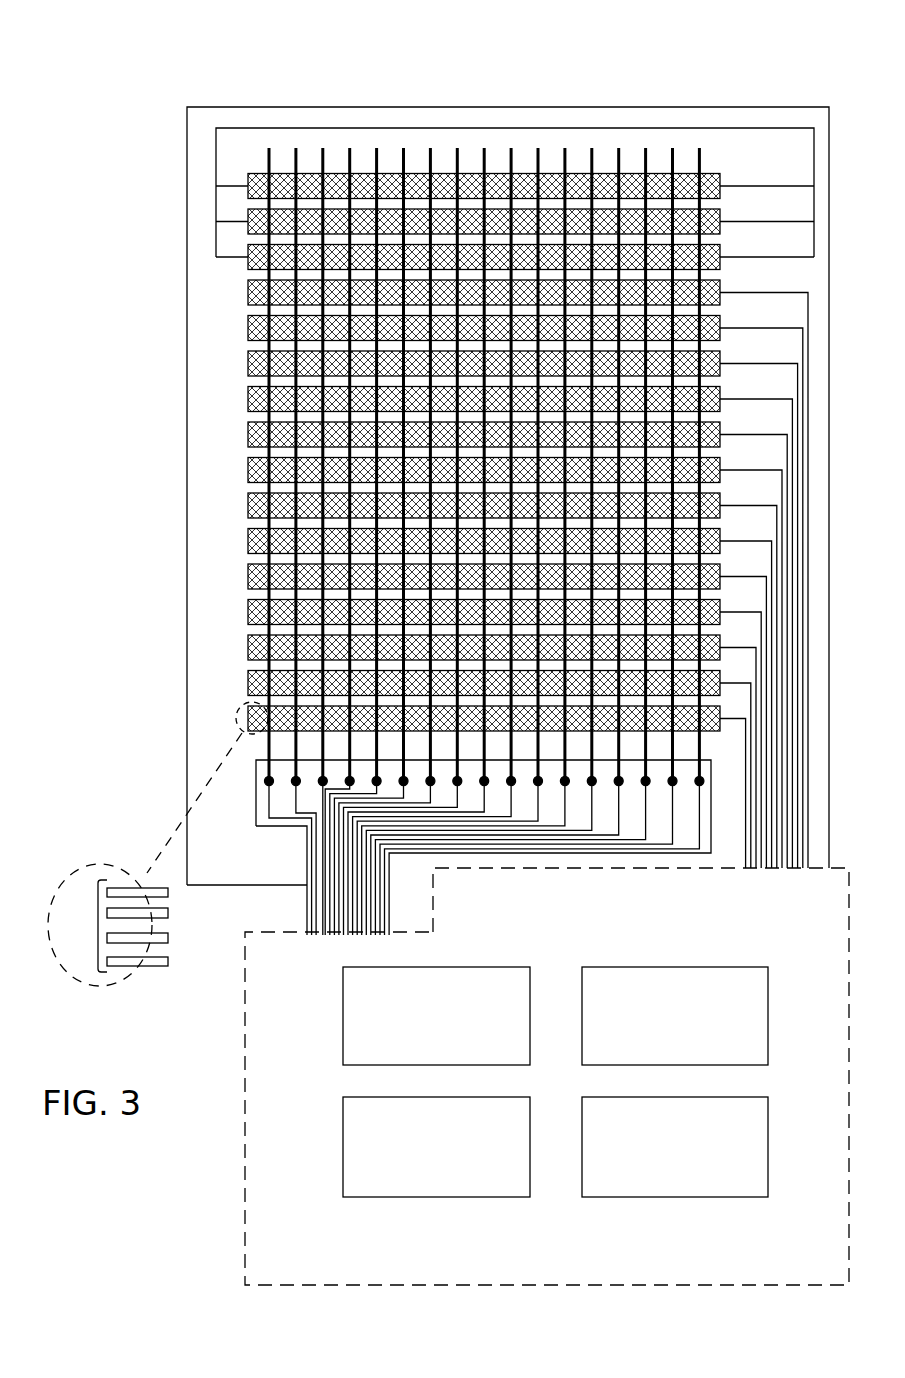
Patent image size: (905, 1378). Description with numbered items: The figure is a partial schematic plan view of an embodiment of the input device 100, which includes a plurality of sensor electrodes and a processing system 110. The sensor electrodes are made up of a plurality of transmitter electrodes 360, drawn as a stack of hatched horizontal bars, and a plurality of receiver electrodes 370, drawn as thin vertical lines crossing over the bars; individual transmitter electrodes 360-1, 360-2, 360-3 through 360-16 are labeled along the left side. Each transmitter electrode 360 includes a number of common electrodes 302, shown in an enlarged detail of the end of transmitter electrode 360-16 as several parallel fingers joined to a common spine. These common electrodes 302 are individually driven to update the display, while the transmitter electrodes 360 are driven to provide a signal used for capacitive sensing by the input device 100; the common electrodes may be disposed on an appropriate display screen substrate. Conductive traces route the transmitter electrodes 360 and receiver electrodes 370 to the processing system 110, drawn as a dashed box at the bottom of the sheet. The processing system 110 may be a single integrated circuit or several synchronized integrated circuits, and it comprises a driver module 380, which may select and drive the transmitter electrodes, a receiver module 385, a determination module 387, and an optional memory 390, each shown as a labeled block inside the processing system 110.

The input device 100 is at (213, 90).
The receiver electrodes 370 is at (708, 115).
The transmitter electrodes 360 is at (427, 564).
The transmitter electrode 360-1 is at (248, 180).
The transmitter electrode 360-2 is at (248, 228).
The transmitter electrode 360-3 is at (459, 266).
The transmitter electrode 360-16 is at (248, 722).
The common electrodes 302 is at (167, 915).
The processing system 110 is at (787, 927).
The driver module 380 is at (419, 1055).
The receiver module 385 is at (657, 1055).
The memory 390 is at (419, 1183).
The determination module 387 is at (657, 1183).